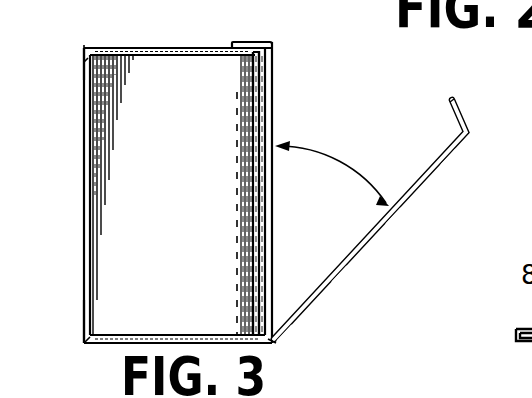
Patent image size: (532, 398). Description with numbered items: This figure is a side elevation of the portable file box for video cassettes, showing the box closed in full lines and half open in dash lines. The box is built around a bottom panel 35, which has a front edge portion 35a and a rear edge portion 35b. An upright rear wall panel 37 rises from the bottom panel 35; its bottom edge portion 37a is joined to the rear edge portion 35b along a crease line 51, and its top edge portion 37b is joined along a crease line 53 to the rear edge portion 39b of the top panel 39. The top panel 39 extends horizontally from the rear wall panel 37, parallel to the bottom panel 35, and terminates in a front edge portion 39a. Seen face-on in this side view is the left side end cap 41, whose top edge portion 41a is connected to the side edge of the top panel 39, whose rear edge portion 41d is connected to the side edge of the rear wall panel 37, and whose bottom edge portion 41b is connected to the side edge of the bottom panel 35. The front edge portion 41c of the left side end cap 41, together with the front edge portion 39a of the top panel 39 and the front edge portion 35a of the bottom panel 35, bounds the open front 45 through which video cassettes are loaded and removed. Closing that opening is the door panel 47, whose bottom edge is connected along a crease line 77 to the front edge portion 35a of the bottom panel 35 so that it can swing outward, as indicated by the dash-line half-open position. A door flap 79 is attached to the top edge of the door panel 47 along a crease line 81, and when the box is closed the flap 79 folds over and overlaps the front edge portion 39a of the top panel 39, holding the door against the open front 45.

The bottom panel 35 is at (167, 340).
The front edge portion of bottom panel 35a is at (257, 344).
The rear edge portion of bottom panel 35b is at (107, 342).
The rear wall panel 37 is at (88, 205).
The bottom edge portion of rear wall panel 37a is at (90, 318).
The top edge portion of rear wall panel 37b is at (84, 62).
The top panel 39 is at (175, 49).
The front edge portion of top panel 39a is at (253, 43).
The rear edge portion of top panel 39b is at (103, 48).
The left side end cap 41 is at (228, 213).
The top edge portion of left side end cap 41a is at (245, 65).
The bottom edge portion of left side end cap 41b is at (250, 317).
The front edge portion of left side end cap 41c is at (266, 195).
The rear edge portion of left side end cap 41d is at (100, 172).
The open front 45 is at (283, 113).
The door panel 47 is at (270, 266).
The crease line 51 is at (86, 342).
The crease line 53 is at (84, 40).
The crease line 77 is at (275, 342).
The door flap 79 is at (240, 43).
The crease line 81 is at (468, 133).